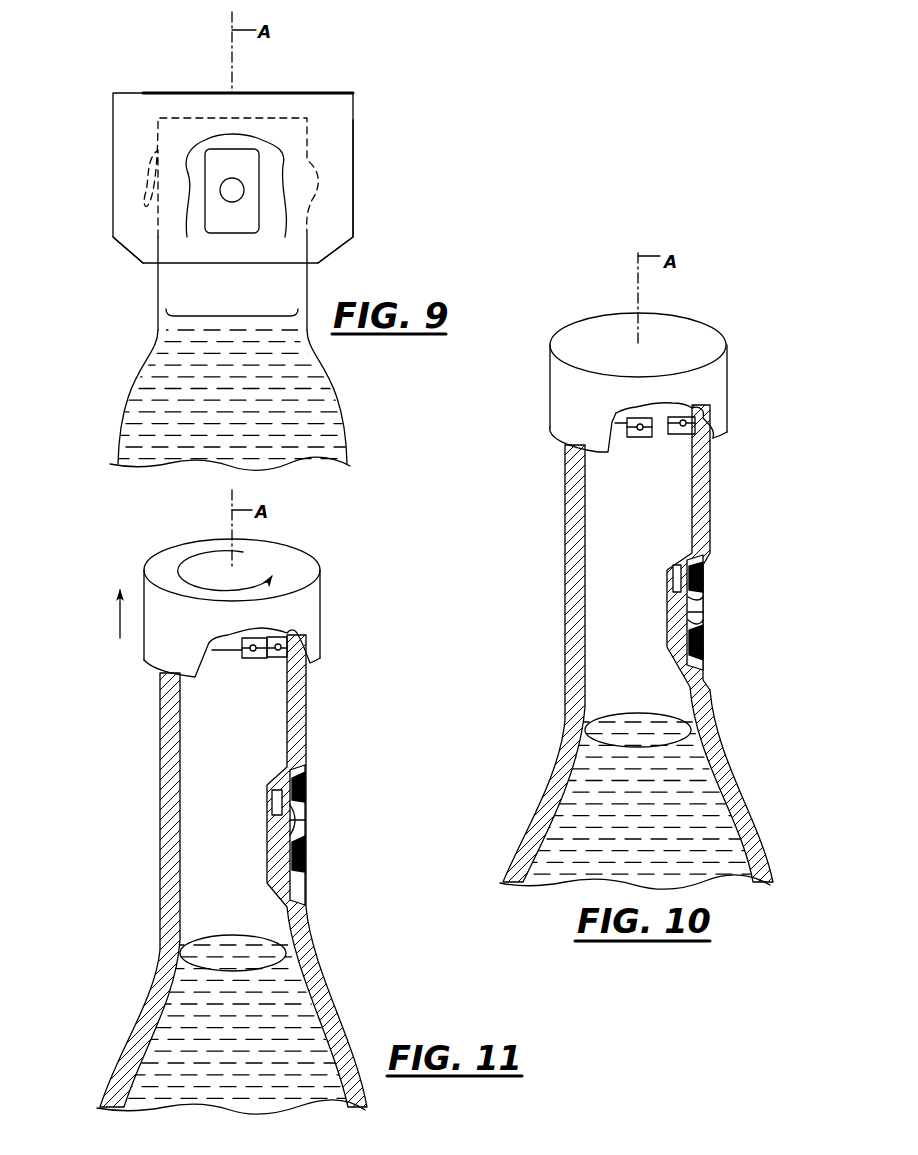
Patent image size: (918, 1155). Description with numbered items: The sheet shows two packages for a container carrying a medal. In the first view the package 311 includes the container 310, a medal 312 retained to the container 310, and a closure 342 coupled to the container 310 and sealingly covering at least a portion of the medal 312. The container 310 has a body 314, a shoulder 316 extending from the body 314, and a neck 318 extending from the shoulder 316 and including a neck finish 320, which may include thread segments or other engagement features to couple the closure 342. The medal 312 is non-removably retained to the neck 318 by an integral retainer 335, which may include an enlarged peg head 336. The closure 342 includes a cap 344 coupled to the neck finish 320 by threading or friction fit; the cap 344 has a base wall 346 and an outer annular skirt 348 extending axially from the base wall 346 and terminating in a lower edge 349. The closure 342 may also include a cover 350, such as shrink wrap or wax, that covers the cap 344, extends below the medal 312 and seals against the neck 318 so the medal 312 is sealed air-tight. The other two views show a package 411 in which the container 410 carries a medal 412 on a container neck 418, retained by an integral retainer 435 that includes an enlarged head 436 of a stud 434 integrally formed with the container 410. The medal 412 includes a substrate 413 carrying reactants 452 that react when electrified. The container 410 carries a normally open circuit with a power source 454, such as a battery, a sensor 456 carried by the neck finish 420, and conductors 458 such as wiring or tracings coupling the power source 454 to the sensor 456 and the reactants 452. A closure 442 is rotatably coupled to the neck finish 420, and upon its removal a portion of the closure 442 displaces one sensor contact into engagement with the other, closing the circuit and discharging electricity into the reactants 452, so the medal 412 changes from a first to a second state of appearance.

In FIG. 9, the container 310 is at (108, 440).
In FIG. 9, the package 311 is at (125, 60).
In FIG. 9, the medal 312 is at (267, 242).
In FIG. 9, the body 314 is at (360, 432).
In FIG. 9, the shoulder 316 is at (140, 368).
In FIG. 9, the neck 318 is at (148, 281).
In FIG. 9, the neck finish 320 is at (140, 155).
In FIG. 9, the integral retainer 335 is at (225, 170).
In FIG. 9, the enlarged peg head 336 is at (234, 190).
In FIG. 9, the closure 342 is at (365, 145).
In FIG. 9, the cap 344 is at (356, 90).
In FIG. 9, the base wall 346 is at (300, 93).
In FIG. 9, the outer annular skirt 348 is at (353, 190).
In FIG. 9, the lower edge 349 is at (332, 237).
In FIG. 9, the cover 350 is at (130, 256).
In FIG. 11, the container 410 is at (105, 1053).
In FIG. 10, the container 410 is at (493, 890).
In FIG. 11, the package 411 is at (125, 572).
In FIG. 10, the package 411 is at (760, 338).
In FIG. 11, the medal 412 is at (312, 778).
In FIG. 10, the medal 412 is at (714, 550).
In FIG. 10, the substrate 413 is at (700, 675).
In FIG. 10, the container neck 418 is at (530, 620).
In FIG. 10, the neck finish 420 is at (699, 413).
In FIG. 10, the stud 434 is at (700, 614).
In FIG. 10, the integral retainer 435 is at (712, 614).
In FIG. 10, the enlarged head 436 is at (699, 604).
In FIG. 11, the closure 442 is at (341, 587).
In FIG. 10, the closure 442 is at (718, 320).
In FIG. 11, the reactants 452 is at (300, 799).
In FIG. 10, the reactants 452 is at (699, 579).
In FIG. 11, the power source 454 is at (268, 807).
In FIG. 10, the power source 454 is at (668, 583).
In FIG. 11, the sensor 456 is at (243, 668).
In FIG. 10, the sensor 456 is at (672, 444).
In FIG. 11, the electrical conductor 458 is at (300, 690).
In FIG. 10, the electrical conductor 458 is at (704, 467).